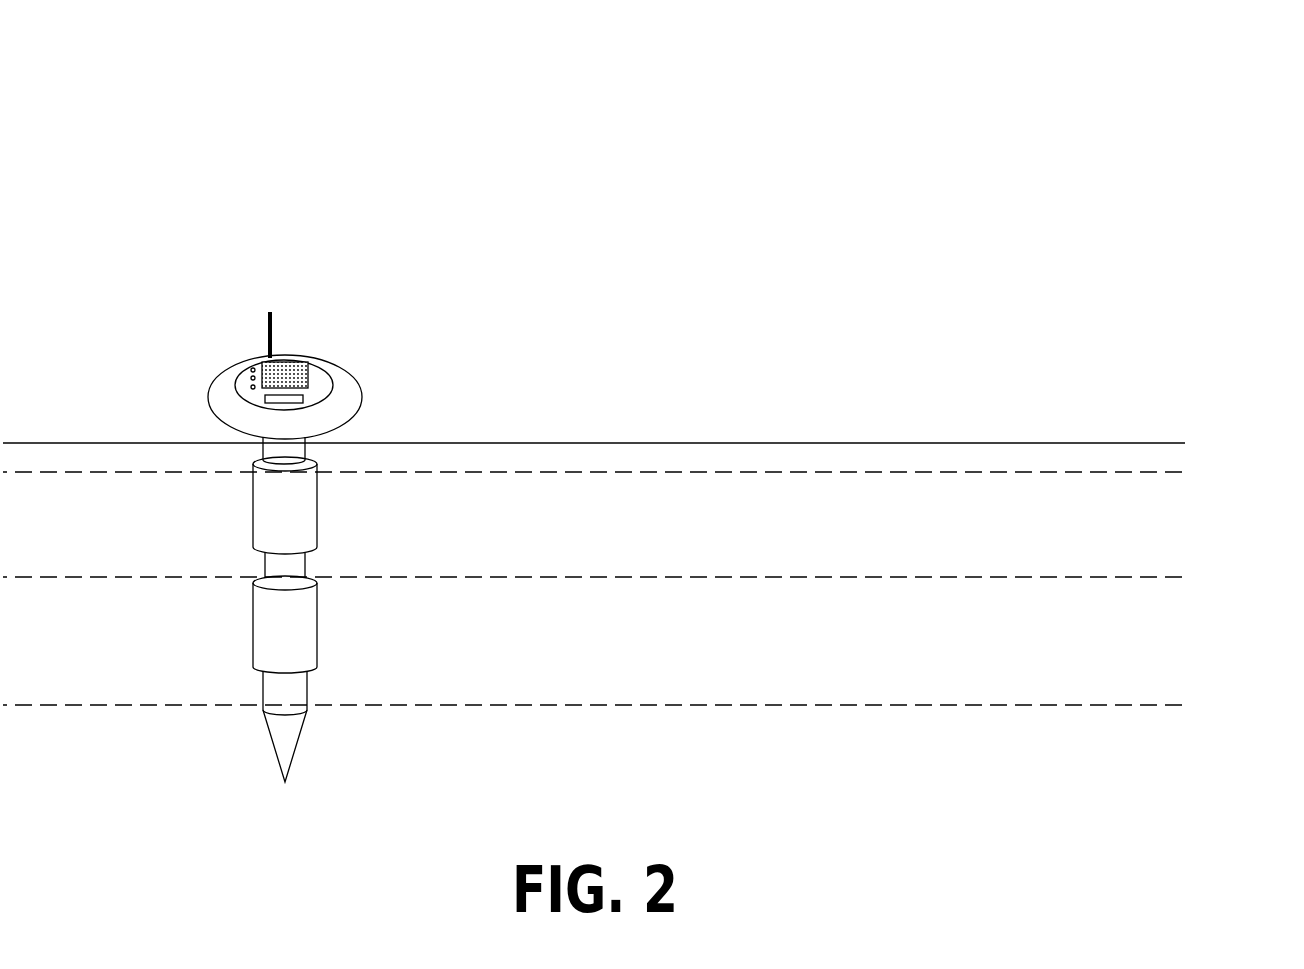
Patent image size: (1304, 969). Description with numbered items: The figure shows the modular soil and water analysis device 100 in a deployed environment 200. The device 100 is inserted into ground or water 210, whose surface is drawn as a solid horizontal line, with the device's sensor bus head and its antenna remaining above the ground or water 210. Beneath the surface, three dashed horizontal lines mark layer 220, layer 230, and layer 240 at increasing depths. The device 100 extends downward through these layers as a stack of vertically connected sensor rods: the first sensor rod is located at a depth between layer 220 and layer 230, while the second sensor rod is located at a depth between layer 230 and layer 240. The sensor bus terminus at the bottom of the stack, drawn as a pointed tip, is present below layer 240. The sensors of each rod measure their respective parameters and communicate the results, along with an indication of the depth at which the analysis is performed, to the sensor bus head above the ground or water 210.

The deployed environment 200 is at (104, 117).
The modular soil and water analysis device 100 is at (204, 326).
The ground or water 210 is at (782, 443).
The layer 220 is at (1182, 472).
The layer 230 is at (1185, 577).
The layer 240 is at (923, 705).